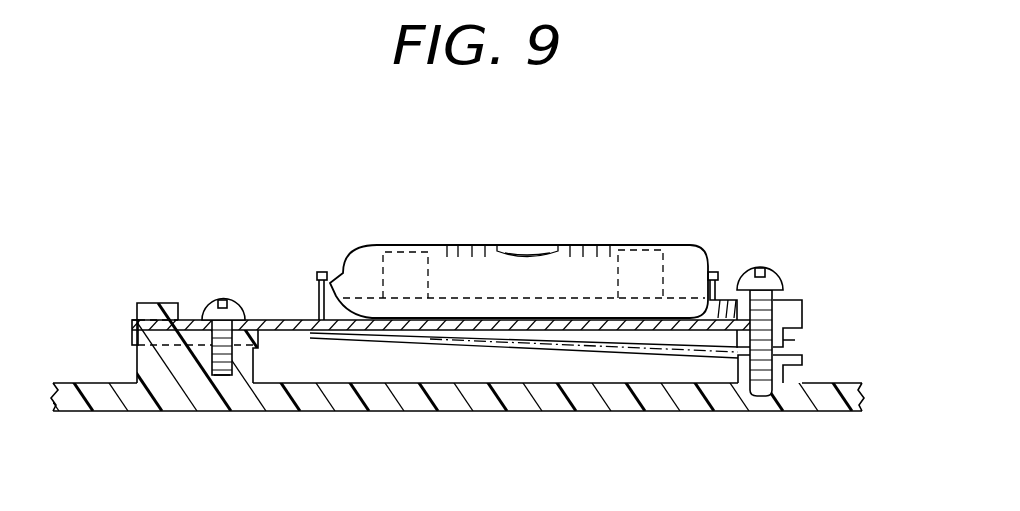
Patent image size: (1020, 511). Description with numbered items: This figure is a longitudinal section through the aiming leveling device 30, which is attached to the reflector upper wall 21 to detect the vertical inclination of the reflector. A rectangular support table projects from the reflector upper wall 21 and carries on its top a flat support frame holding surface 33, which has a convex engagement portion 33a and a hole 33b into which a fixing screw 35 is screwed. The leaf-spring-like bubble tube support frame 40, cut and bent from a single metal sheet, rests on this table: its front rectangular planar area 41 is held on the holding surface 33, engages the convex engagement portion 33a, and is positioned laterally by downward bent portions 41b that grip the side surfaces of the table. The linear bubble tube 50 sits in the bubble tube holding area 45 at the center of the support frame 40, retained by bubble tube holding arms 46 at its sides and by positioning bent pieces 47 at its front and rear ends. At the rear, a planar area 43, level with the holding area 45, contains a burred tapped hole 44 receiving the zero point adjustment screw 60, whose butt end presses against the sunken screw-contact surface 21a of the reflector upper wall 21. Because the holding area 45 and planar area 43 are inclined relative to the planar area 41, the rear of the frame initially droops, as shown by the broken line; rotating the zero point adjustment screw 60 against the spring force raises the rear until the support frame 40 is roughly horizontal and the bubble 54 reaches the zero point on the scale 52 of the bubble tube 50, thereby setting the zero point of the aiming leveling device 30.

The reflector upper wall 21 is at (627, 402).
The screw-contact surface 21a is at (785, 364).
The aiming leveling device 30 is at (317, 256).
The support frame holding surface 33 is at (193, 320).
The convex engagement portion 33a is at (137, 327).
The hole 33b is at (223, 378).
The fixing screw 35 is at (230, 300).
The bubble tube support frame 40 is at (307, 333).
The rectangular planar area 41 is at (257, 318).
The downward bent portions 41b is at (131, 327).
The planar area 43 is at (788, 308).
The tapped hole 44 is at (778, 342).
The bubble tube holding area 45 is at (492, 325).
The bubble tube holding arms 46 is at (406, 250).
The positioning bent pieces 47 is at (330, 270).
The bubble tube 50 is at (677, 240).
The scale 52 is at (468, 248).
The bubble 54 is at (540, 248).
The zero point adjustment screw 60 is at (772, 270).